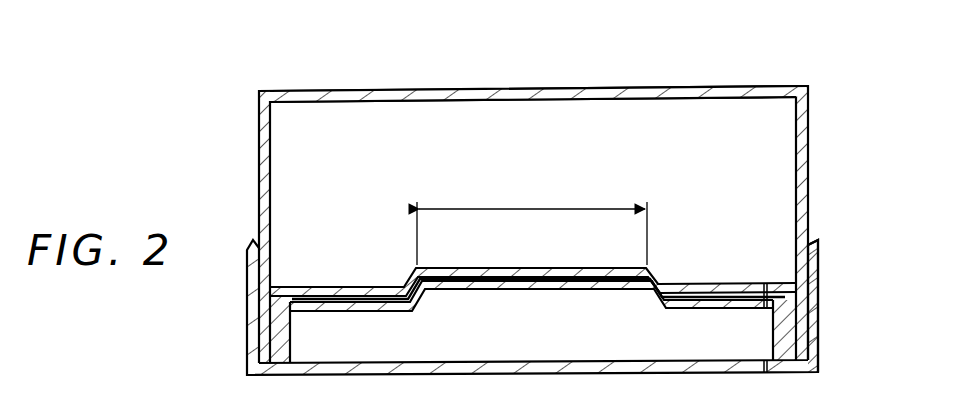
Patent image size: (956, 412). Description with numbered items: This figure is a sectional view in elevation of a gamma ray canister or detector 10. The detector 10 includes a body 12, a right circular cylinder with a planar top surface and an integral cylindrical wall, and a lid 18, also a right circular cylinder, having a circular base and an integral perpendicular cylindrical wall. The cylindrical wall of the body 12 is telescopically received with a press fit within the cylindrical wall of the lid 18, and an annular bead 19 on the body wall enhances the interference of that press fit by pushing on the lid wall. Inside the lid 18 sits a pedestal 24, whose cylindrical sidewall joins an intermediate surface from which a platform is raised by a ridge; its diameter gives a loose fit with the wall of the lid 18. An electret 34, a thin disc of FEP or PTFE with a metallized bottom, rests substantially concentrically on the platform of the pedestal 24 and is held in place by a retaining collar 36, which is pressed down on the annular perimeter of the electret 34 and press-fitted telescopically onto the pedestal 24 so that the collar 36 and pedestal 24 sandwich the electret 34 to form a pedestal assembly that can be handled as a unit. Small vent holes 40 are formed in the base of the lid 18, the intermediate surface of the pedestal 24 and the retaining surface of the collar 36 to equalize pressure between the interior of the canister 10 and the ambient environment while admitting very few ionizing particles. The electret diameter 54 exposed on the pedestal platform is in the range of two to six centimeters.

The gamma ray detector 10 is at (755, 51).
The body 12 is at (815, 149).
The lid 18 is at (823, 346).
The annular bead 19 is at (809, 242).
The pedestal 24 is at (684, 316).
The electret 34 is at (597, 256).
The retaining collar 36 is at (686, 280).
The vent holes 40 is at (768, 283).
The electret diameter 54 is at (571, 205).